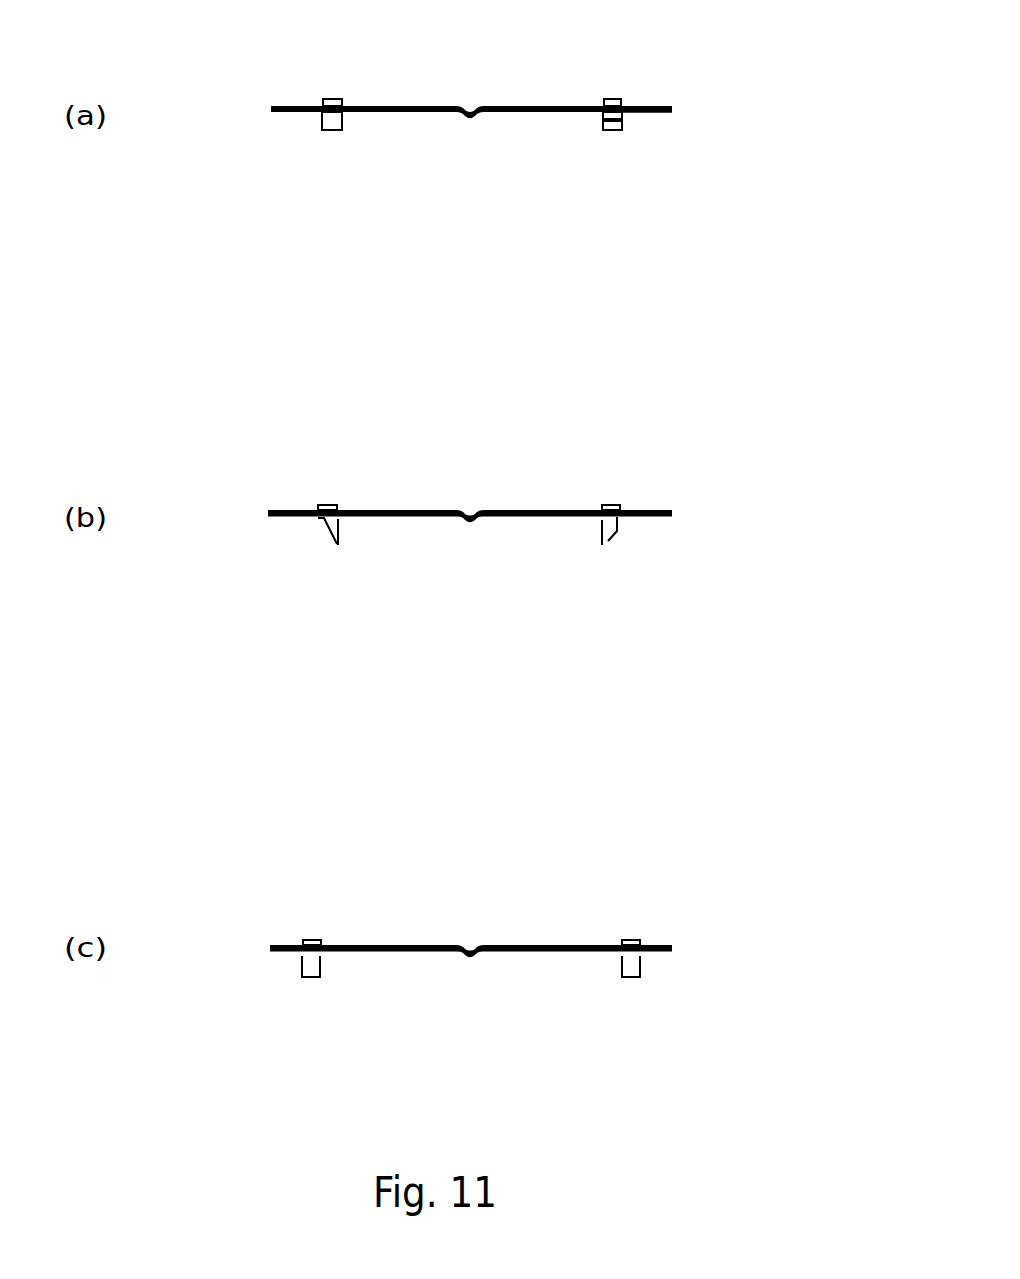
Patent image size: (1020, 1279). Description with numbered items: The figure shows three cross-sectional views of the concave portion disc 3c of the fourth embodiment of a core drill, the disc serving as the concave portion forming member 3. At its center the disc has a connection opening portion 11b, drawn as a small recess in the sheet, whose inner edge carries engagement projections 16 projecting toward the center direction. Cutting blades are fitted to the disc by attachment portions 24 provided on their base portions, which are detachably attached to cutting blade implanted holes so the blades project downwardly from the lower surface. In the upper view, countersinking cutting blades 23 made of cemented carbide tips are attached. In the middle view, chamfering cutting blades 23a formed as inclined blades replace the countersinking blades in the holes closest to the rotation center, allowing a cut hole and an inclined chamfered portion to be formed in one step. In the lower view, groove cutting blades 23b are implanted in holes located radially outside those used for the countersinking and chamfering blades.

The concave portion forming member 3 is at (311, 391).
The concave portion disc 3c is at (650, 106).
The connection opening portion 11b is at (413, 105).
The engagement projections 16 is at (472, 106).
The countersinking cutting blades 23 is at (612, 131).
The chamfering cutting blades 23a is at (608, 542).
The groove cutting blades 23b is at (630, 978).
The attachment portions 24 is at (610, 99).